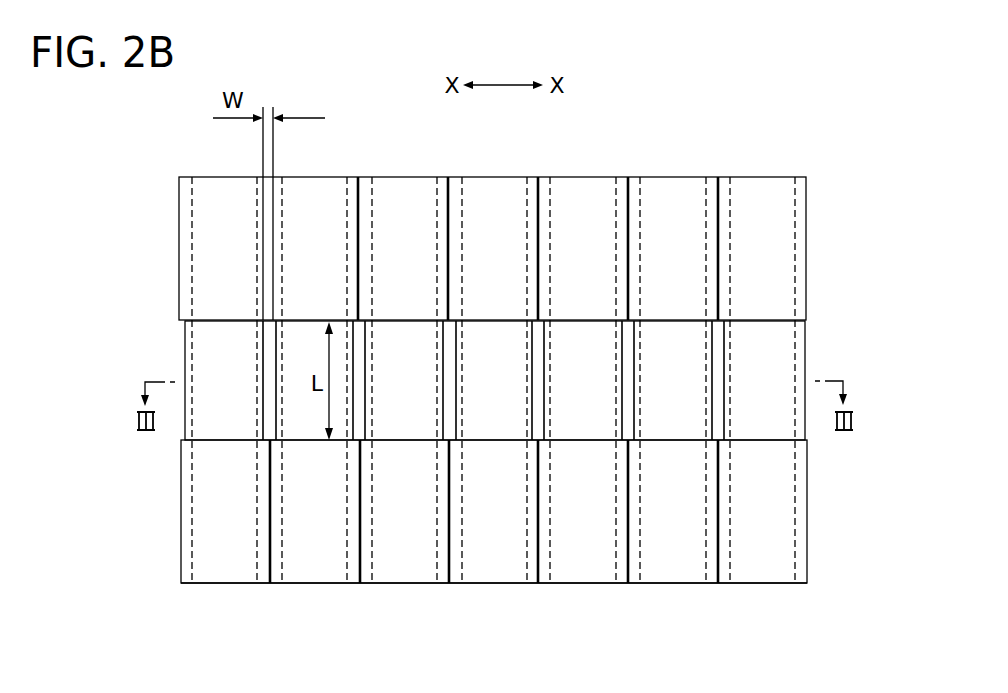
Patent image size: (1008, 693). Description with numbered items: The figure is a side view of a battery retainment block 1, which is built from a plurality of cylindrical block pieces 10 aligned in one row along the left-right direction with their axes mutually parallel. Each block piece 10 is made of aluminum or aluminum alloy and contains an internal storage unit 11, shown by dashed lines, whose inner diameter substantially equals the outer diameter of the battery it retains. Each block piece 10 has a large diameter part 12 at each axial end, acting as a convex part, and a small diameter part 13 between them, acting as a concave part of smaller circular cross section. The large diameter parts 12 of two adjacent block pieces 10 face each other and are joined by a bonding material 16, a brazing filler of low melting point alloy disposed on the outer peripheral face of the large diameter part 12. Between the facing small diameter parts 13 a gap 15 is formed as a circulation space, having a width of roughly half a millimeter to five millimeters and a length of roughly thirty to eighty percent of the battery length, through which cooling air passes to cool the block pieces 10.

The battery retainment block 1 is at (808, 112).
The block piece 10 is at (755, 655).
The storage unit 11 is at (780, 491).
The large diameter part 12 is at (670, 615).
The small diameter part 13 is at (685, 380).
The gap 15 is at (728, 325).
The bonding material 16 is at (718, 537).